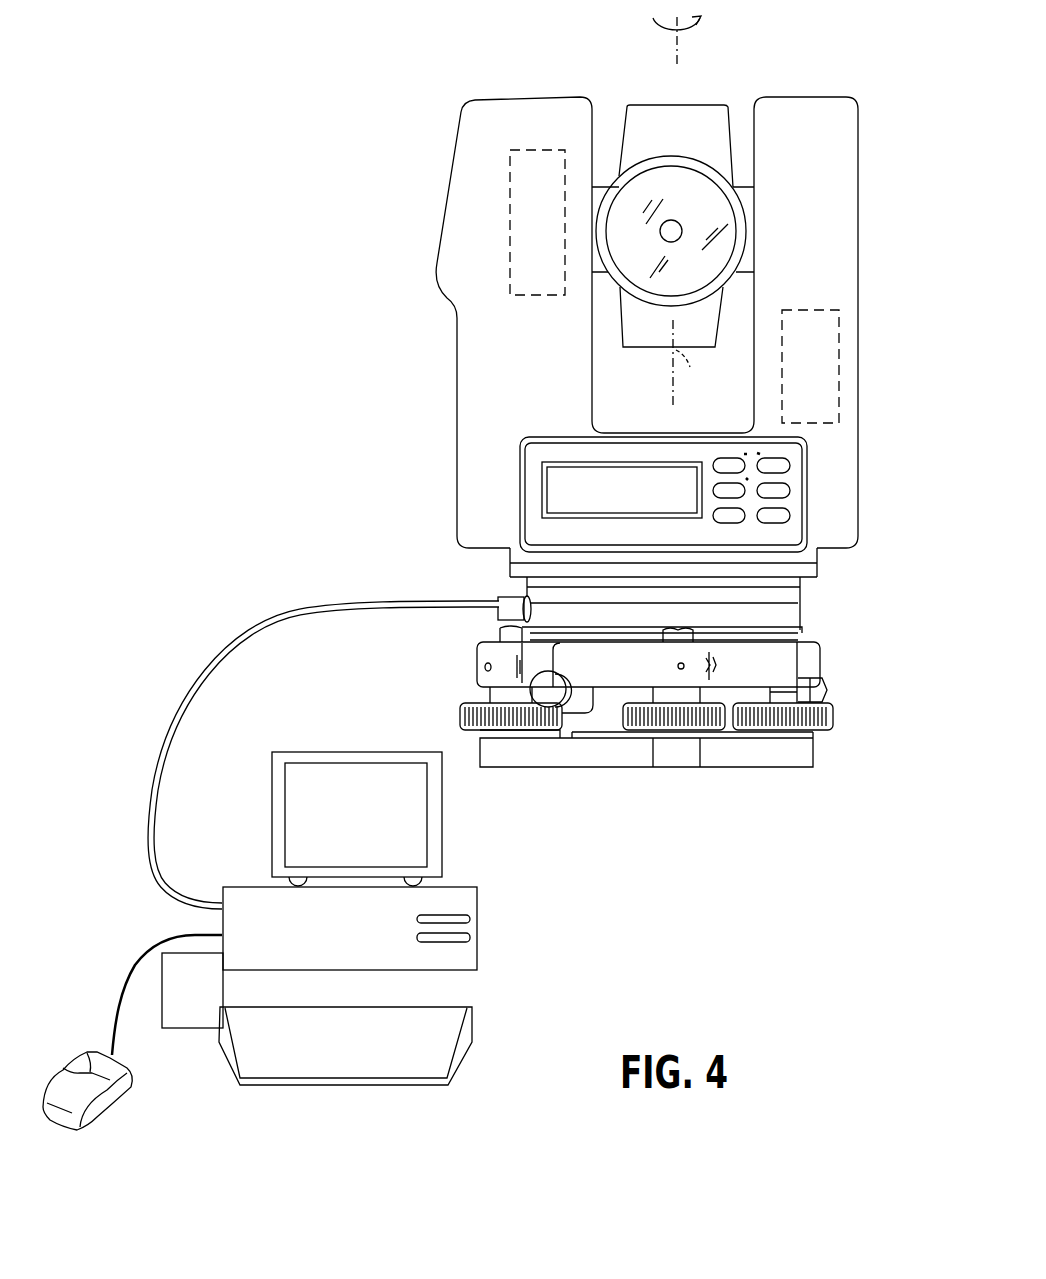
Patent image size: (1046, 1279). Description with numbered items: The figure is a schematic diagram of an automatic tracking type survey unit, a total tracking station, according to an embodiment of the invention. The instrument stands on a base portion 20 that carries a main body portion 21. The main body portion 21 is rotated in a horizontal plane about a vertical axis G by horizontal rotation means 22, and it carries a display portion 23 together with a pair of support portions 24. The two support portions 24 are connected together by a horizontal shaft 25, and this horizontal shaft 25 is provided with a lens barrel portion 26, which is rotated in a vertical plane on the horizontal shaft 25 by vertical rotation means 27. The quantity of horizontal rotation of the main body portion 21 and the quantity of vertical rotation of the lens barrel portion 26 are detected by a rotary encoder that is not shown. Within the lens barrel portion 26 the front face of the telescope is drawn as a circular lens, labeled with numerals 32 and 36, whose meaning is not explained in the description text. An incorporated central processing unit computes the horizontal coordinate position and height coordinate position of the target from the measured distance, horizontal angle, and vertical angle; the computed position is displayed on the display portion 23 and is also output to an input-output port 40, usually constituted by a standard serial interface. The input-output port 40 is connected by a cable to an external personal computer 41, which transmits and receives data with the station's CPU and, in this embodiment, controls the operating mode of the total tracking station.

The base portion 20 is at (827, 655).
The main body portion 21 is at (865, 480).
The horizontal rotation means 22 is at (839, 355).
The display portion 23 is at (557, 485).
The support portions 24 is at (453, 264).
The horizontal shaft 25 is at (755, 180).
The lens barrel portion 26 is at (718, 112).
The vertical rotation means 27 is at (510, 167).
The objective lens 32 is at (643, 187).
The optical axis 36 is at (669, 241).
The input-output port 40 is at (500, 597).
The personal computer 41 is at (455, 870).